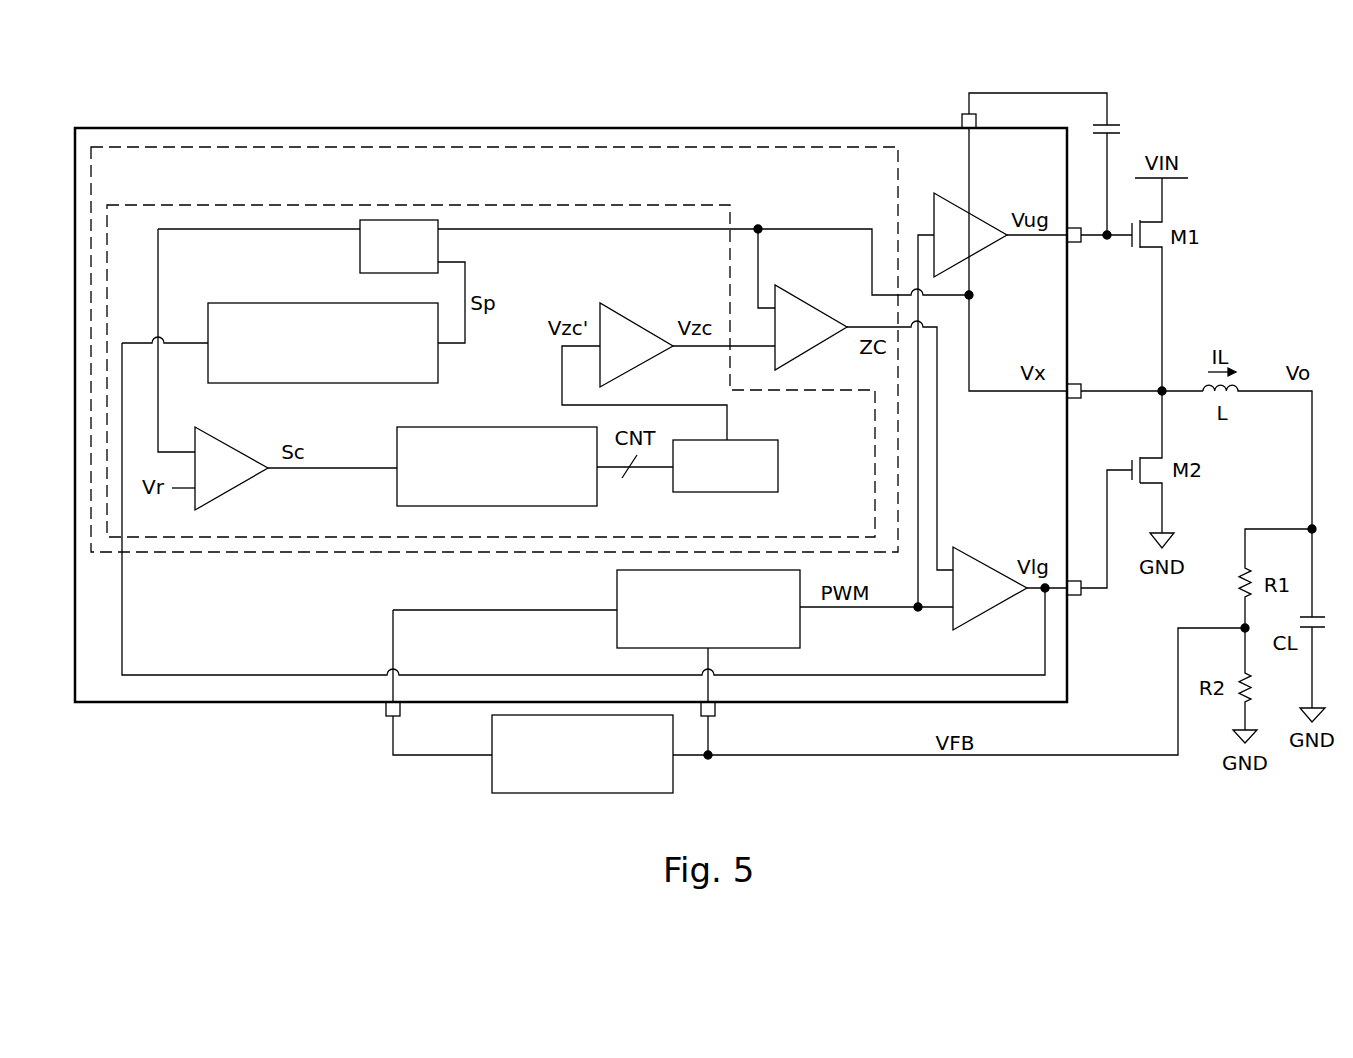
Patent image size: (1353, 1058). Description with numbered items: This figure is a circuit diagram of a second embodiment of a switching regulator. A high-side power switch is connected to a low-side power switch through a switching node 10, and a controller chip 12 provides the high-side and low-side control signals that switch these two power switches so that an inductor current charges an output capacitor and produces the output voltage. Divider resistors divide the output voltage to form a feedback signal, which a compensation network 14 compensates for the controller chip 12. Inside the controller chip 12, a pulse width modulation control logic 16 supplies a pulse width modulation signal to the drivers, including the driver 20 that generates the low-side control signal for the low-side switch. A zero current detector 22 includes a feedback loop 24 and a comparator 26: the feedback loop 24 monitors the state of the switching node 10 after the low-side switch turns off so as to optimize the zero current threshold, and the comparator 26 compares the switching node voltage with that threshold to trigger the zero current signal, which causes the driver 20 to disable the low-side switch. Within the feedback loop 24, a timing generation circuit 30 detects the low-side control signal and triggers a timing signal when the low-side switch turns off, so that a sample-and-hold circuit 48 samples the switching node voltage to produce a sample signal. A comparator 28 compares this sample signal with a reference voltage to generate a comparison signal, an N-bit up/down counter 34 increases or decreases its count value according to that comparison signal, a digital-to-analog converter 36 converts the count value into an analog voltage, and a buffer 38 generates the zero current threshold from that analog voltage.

The switching node 10 is at (1162, 391).
The controller chip 12 is at (203, 702).
The compensation network 14 is at (583, 793).
The pulse width modulation control logic 16 is at (617, 590).
The driver 20 is at (990, 565).
The zero current detector 22 is at (205, 552).
The feedback loop 24 is at (268, 537).
The comparator 26 is at (813, 300).
The comparator 28 is at (230, 443).
The timing generation circuit 30 is at (323, 383).
The N-bit up/down counter 34 is at (497, 423).
The digital-to-analog converter 36 is at (715, 492).
The buffer 38 is at (638, 322).
The sample-and-hold circuit 48 is at (360, 247).